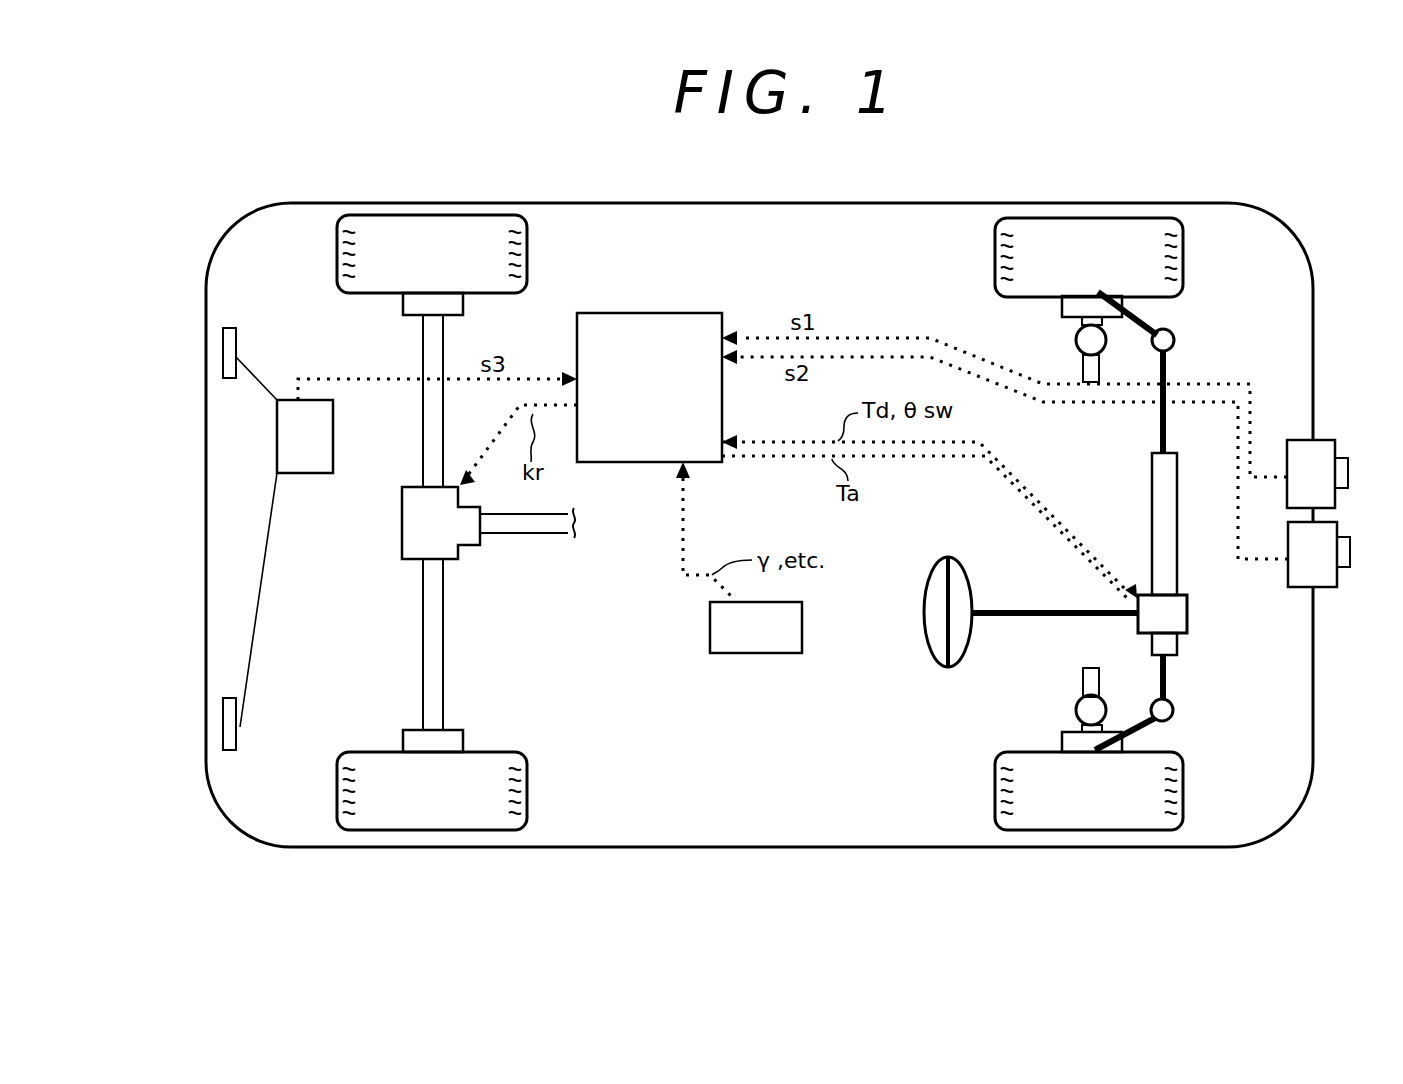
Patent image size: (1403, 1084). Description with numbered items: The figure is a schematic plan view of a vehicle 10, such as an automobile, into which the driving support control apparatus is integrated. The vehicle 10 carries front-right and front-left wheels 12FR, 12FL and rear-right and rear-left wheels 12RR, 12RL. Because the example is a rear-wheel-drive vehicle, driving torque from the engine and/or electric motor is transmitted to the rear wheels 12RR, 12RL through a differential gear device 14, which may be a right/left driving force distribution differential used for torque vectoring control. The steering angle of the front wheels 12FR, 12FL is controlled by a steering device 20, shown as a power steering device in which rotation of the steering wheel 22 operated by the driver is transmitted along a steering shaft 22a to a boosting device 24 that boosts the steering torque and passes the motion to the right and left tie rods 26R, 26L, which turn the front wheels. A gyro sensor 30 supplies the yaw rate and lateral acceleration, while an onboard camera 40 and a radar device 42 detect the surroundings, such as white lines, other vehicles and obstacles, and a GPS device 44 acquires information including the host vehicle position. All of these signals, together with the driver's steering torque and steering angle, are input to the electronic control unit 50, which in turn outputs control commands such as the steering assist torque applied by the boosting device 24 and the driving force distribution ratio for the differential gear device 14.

The vehicle 10 is at (1340, 305).
The rear-left wheel 12RL is at (432, 265).
The rear-right wheel 12RR is at (432, 780).
The front-left wheel 12FL is at (1089, 267).
The front-right wheel 12FR is at (1089, 781).
The differential gear device 14 is at (488, 522).
The steering device 20 is at (1189, 581).
The steering wheel 22 is at (925, 619).
The steering shaft 22a is at (1040, 608).
The boosting device 24 is at (1190, 615).
The left tie rod 26L is at (1144, 326).
The right tie rod 26R is at (1137, 722).
The gyro sensor 30 is at (756, 627).
The onboard camera 40 is at (1317, 474).
The radar device 42 is at (1319, 554).
The GPS device 44 is at (278, 539).
The electronic control unit 50 is at (649, 387).